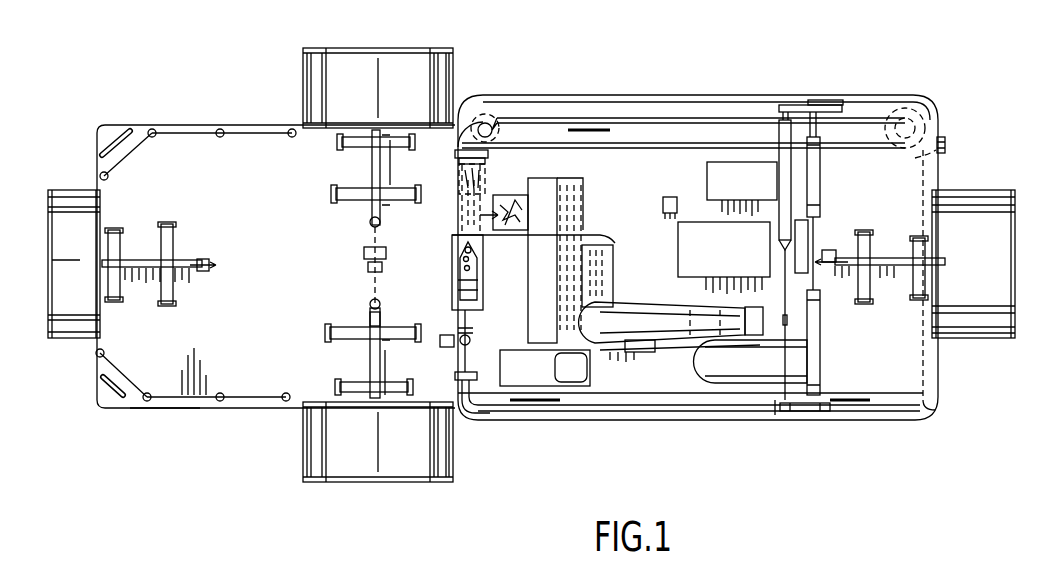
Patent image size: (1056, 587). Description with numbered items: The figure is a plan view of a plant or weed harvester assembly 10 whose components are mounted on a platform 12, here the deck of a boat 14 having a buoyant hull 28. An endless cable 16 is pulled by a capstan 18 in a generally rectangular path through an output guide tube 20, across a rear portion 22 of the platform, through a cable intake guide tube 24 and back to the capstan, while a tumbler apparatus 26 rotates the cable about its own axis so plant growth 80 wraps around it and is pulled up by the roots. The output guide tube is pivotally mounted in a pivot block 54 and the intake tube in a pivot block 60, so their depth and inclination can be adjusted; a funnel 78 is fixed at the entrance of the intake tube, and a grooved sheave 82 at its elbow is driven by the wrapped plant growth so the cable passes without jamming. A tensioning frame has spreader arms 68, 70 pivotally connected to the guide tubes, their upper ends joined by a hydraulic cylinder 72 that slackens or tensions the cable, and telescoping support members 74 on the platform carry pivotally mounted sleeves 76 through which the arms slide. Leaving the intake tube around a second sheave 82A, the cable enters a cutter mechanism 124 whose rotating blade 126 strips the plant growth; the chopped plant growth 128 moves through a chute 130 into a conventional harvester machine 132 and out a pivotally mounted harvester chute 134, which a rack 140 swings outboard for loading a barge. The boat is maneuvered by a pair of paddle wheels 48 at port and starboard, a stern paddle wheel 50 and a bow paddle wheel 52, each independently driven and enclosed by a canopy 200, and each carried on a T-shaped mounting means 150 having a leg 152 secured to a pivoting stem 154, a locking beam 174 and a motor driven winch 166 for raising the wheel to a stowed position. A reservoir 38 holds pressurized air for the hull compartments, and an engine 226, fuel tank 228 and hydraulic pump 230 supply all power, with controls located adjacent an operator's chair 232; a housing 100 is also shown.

The harvester assembly 10 is at (900, 79).
The platform 12 is at (643, 179).
The boat 14 is at (235, 420).
The endless cable 16 is at (468, 358).
The capstan 18 is at (478, 270).
The output guide tube 20 is at (552, 420).
The rear portion of platform 22 is at (936, 369).
The cable intake guide tube 24 is at (672, 104).
The tumbler apparatus 26 is at (460, 279).
The buoyant hull 28 is at (143, 410).
The reservoir 38 is at (751, 361).
The paddle wheels 48 is at (303, 69).
The stern paddle wheel 50 is at (995, 190).
The bow paddle wheel 52 is at (75, 340).
The pivot block 54 is at (455, 376).
The pivot block 60 is at (458, 153).
The spreader arm 68 is at (800, 413).
The spreader arm 70 is at (796, 105).
The hydraulic cylinder 72 is at (781, 147).
The telescoping support members 74 is at (820, 182).
The sleeves 76 is at (820, 108).
The funnel 78 is at (945, 140).
The plant growth 80 is at (477, 183).
The sheave 82 is at (877, 125).
The second sheave 82A is at (530, 128).
The pump housing 100 is at (480, 296).
The cutter mechanism 124 is at (478, 207).
The rotating blade 126 is at (467, 222).
The chopped plant growth 128 is at (525, 207).
The chute 130 is at (556, 267).
The harvester machine 132 is at (582, 207).
The harvester chute 134 is at (629, 312).
The rack 140 is at (622, 350).
The T-shaped mounting means 150 is at (196, 252).
The leg 152 is at (142, 268).
The stem 154 is at (172, 283).
The motor driven winch 166 is at (210, 270).
The locking beam 174 is at (128, 228).
The canopy 200 is at (432, 85).
The engine 226 is at (745, 261).
The fuel tank 228 is at (763, 193).
The hydraulic pump 230 is at (690, 178).
The operator's chair 232 is at (590, 380).